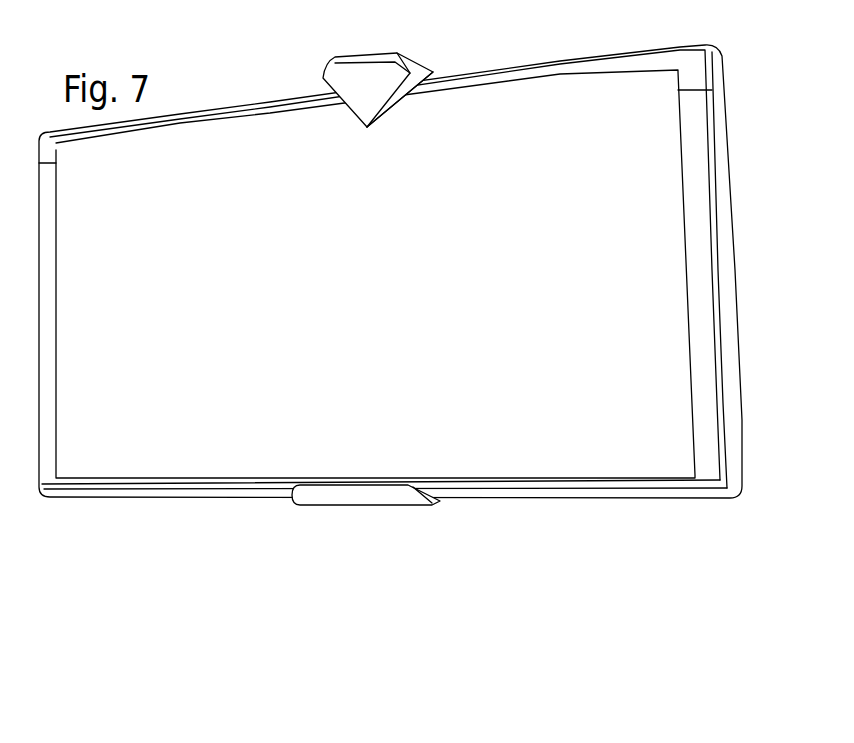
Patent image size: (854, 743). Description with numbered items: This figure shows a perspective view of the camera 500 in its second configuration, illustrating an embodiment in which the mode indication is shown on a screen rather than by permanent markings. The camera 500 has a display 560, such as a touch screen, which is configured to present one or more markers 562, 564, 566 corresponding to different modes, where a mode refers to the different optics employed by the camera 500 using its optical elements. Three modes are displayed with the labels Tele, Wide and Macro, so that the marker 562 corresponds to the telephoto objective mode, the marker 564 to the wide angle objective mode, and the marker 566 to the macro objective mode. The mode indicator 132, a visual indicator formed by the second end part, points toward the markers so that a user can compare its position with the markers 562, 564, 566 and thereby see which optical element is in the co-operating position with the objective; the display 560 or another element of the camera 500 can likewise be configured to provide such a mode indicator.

The camera 500 is at (85, 490).
The display 560 is at (198, 457).
The marker 562 is at (285, 175).
The marker 564 is at (370, 168).
The marker 566 is at (455, 158).
The mode indicator 132 is at (367, 128).